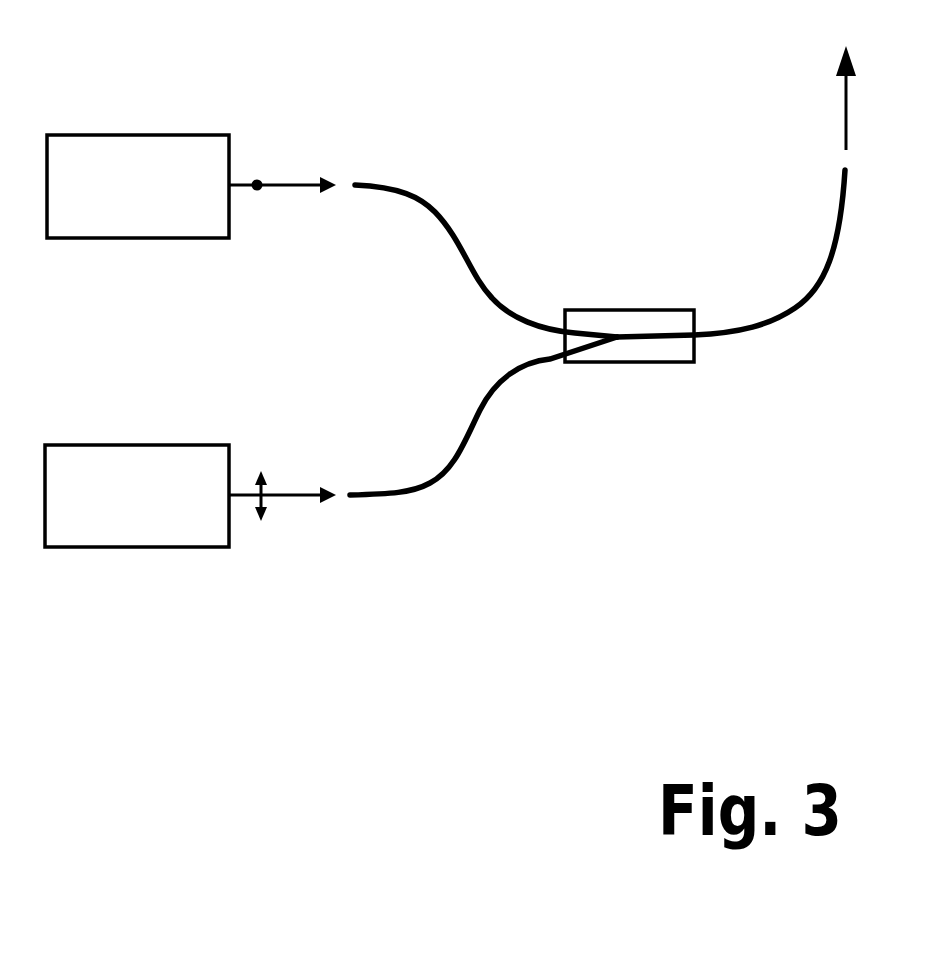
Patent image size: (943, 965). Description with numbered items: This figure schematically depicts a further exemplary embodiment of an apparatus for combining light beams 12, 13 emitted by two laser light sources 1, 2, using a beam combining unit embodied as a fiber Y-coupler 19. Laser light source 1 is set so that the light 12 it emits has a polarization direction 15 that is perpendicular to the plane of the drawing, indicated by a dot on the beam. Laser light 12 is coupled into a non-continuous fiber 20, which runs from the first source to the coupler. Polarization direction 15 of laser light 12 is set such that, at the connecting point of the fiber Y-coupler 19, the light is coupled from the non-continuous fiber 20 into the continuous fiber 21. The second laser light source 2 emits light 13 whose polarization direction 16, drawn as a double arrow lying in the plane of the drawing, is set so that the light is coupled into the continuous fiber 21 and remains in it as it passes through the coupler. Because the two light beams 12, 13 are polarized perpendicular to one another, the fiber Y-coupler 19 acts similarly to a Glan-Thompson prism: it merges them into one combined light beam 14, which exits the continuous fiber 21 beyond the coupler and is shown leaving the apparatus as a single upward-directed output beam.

The laser light source 1 is at (154, 208).
The laser light source 2 is at (120, 515).
The light beam 12 is at (278, 183).
The light beam 13 is at (278, 497).
The combined light beam 14 is at (840, 102).
The polarization direction 15 is at (256, 190).
The polarization direction 16 is at (261, 468).
The fiber Y-coupler 19 is at (634, 398).
The non-continuous fiber 20 is at (440, 200).
The continuous fiber 21 is at (437, 492).